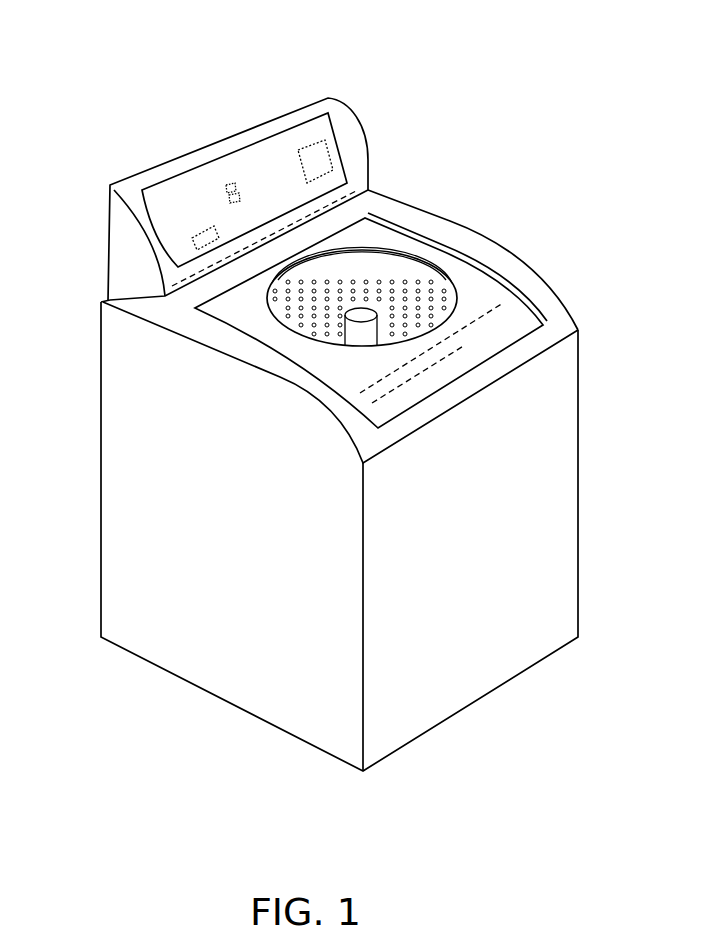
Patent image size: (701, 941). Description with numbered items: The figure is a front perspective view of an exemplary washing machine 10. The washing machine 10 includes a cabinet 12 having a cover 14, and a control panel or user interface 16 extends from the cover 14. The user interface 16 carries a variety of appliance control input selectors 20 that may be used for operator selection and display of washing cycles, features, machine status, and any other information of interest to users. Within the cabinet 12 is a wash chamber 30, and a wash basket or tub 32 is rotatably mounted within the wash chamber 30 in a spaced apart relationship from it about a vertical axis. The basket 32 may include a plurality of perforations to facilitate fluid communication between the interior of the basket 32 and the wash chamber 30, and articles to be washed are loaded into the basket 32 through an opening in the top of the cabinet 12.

The washing machine 10 is at (160, 79).
The cabinet 12 is at (118, 445).
The cover 14 is at (512, 262).
The control panel or user interface 16 is at (303, 138).
The appliance control input selectors 20 is at (232, 185).
The wash chamber 30 is at (367, 272).
The wash basket or tub 32 is at (410, 275).